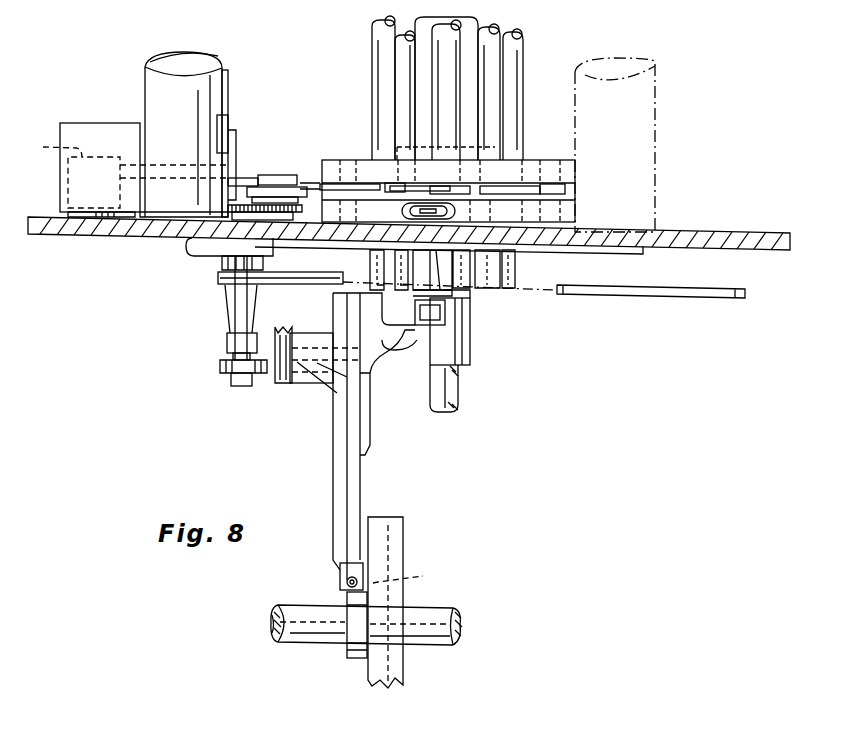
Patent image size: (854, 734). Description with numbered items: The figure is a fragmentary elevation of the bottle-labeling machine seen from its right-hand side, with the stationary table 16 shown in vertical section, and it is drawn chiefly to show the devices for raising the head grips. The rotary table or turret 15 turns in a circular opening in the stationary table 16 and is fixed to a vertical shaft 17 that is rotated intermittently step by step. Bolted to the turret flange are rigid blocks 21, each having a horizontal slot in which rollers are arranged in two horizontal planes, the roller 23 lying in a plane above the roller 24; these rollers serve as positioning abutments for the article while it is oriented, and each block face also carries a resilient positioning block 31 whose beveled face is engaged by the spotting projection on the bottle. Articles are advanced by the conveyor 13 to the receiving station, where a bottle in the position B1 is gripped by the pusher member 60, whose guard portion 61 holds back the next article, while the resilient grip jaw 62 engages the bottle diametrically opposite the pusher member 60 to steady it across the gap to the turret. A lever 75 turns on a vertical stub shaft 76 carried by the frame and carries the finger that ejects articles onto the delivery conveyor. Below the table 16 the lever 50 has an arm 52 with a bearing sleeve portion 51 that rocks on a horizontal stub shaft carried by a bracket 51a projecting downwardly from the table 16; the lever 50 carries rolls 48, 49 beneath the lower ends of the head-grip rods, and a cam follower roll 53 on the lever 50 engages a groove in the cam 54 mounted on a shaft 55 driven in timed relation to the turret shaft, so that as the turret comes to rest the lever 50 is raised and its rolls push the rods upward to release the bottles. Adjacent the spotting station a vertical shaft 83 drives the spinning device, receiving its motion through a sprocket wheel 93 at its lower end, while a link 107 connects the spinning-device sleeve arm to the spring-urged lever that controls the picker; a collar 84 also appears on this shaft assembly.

The article position B1 is at (155, 72).
The guard portion 61 is at (70, 127).
The pusher member 60 is at (142, 124).
The grip jaw 62 is at (231, 122).
The lever 75 is at (250, 174).
The roller 23 is at (318, 181).
The rigid block 21 is at (363, 162).
The vertical stub shaft 76 is at (60, 150).
The stationary table 16 is at (690, 242).
The conveyor 13 is at (175, 229).
The roller 24 is at (318, 191).
The positioning block 31 is at (432, 217).
The rotary table or turret 15 is at (643, 255).
The vertical shaft 83 is at (232, 305).
The collar 84 is at (228, 336).
The sprocket wheel 93 is at (225, 378).
The bracket 51a is at (283, 336).
The roll 49 is at (445, 312).
The roll 48 is at (418, 332).
The link 107 is at (700, 298).
The vertical shaft 17 is at (455, 392).
The arm 52 is at (332, 385).
The bearing sleeve portion 51 is at (297, 388).
The lever 50 is at (403, 355).
The cam 54 is at (398, 533).
The cam follower roll 53 is at (416, 564).
The shaft 55 is at (443, 645).